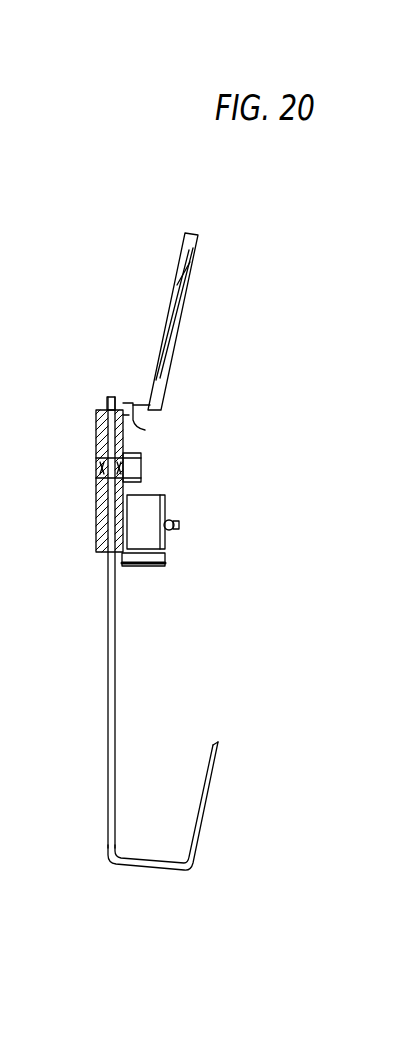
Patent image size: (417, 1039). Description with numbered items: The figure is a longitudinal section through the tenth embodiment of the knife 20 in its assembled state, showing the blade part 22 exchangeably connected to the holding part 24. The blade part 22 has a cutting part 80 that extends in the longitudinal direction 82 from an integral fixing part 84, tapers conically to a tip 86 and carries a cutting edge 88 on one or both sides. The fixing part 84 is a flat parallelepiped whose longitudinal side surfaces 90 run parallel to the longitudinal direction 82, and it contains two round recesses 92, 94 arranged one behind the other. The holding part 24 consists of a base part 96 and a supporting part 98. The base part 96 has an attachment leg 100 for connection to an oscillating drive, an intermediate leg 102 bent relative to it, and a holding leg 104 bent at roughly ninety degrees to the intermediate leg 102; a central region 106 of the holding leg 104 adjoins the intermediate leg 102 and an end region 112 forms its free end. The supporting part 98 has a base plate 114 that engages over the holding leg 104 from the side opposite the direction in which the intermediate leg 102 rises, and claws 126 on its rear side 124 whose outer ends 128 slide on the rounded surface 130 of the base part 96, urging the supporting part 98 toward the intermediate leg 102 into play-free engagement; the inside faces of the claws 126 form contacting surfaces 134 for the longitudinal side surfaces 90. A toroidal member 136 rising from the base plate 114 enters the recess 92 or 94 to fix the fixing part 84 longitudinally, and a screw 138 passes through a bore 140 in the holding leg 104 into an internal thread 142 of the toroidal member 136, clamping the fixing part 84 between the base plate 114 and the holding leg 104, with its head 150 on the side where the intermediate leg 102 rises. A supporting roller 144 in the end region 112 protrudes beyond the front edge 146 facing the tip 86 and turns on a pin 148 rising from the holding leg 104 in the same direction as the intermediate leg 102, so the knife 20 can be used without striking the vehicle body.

The knife 20 is at (100, 214).
The blade part 22 is at (130, 723).
The holding part 24 is at (200, 356).
The cutting part 80 is at (107, 640).
The longitudinal direction 82 is at (272, 590).
The fixing part 84 is at (96, 413).
The tip 86 is at (212, 755).
The cutting edge 88 is at (107, 670).
The longitudinal side surfaces 90 is at (107, 613).
The round recess 92 is at (96, 470).
The round recess 94 is at (85, 557).
The base part 96 is at (168, 218).
The supporting part 98 is at (107, 586).
The attachment leg 100 is at (177, 285).
The intermediate leg 102 is at (135, 432).
The holding leg 104 is at (167, 560).
The central region 106 is at (135, 458).
The end region 112 is at (165, 575).
The base plate 114 is at (96, 520).
The rear side 124 is at (95, 430).
The claws 126 is at (133, 402).
The outer ends 128 is at (148, 400).
The rounded surface 130 is at (107, 399).
The contacting surfaces 134 is at (135, 445).
The toroidal member 136 is at (96, 493).
The screw 138 is at (165, 497).
The bore 140 is at (168, 512).
The internal thread 142 is at (96, 477).
The supporting roller 144 is at (178, 527).
The front edge 146 is at (122, 568).
The pin 148 is at (277, 600).
The head 150 is at (141, 468).